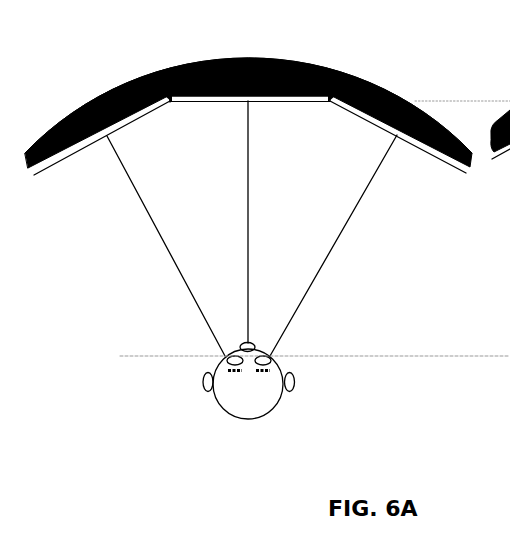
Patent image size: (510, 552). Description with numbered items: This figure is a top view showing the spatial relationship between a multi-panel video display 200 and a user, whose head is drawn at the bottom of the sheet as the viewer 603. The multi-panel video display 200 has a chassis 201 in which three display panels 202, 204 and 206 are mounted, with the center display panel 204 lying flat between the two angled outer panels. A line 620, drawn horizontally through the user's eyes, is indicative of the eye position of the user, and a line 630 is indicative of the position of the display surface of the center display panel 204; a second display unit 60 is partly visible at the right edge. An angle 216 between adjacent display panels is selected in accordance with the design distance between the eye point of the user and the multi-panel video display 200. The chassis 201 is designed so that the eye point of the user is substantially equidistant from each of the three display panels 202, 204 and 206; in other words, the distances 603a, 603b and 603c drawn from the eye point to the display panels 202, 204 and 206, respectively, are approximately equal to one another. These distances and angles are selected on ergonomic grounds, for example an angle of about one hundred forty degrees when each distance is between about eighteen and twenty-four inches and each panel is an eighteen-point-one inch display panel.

The multi-panel video display 200 is at (276, 60).
The chassis 201 is at (57, 122).
The display panel 202 is at (83, 149).
The display panel 204 is at (312, 102).
The display panel 206 is at (466, 173).
The angle 216 is at (190, 102).
The viewer 603 is at (222, 408).
The distance 603a is at (148, 211).
The distance 603b is at (248, 147).
The distance 603c is at (353, 213).
The line 620 is at (462, 357).
The line 630 is at (462, 102).
The adjacent display panel 60 is at (500, 147).